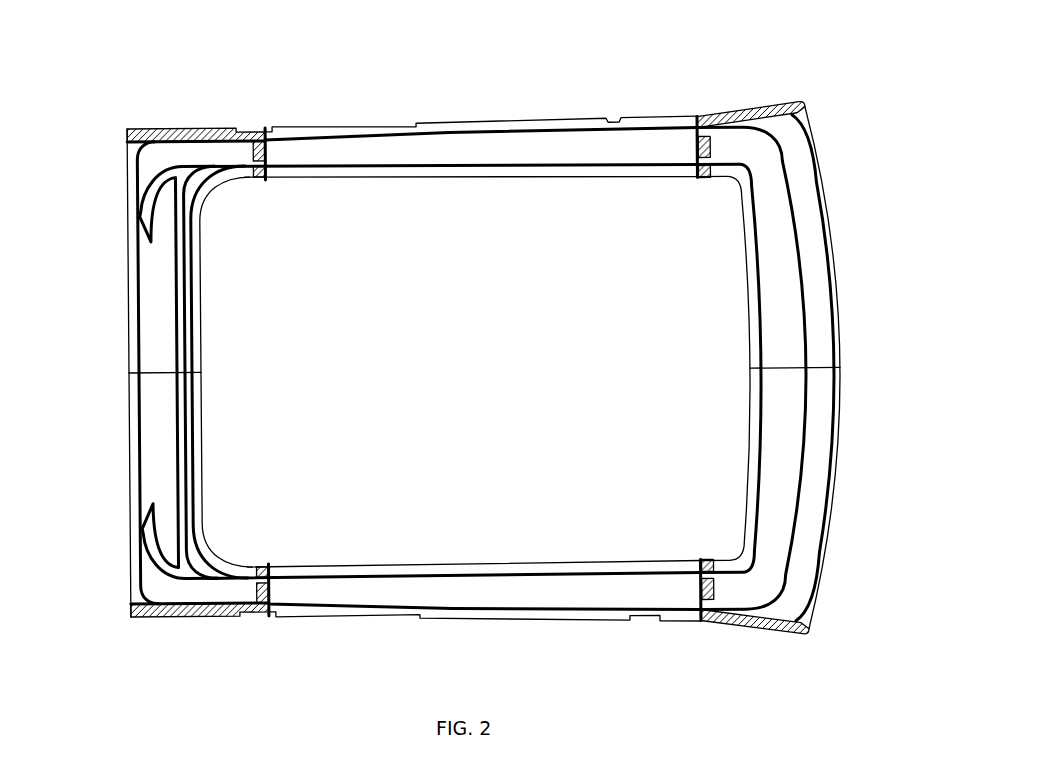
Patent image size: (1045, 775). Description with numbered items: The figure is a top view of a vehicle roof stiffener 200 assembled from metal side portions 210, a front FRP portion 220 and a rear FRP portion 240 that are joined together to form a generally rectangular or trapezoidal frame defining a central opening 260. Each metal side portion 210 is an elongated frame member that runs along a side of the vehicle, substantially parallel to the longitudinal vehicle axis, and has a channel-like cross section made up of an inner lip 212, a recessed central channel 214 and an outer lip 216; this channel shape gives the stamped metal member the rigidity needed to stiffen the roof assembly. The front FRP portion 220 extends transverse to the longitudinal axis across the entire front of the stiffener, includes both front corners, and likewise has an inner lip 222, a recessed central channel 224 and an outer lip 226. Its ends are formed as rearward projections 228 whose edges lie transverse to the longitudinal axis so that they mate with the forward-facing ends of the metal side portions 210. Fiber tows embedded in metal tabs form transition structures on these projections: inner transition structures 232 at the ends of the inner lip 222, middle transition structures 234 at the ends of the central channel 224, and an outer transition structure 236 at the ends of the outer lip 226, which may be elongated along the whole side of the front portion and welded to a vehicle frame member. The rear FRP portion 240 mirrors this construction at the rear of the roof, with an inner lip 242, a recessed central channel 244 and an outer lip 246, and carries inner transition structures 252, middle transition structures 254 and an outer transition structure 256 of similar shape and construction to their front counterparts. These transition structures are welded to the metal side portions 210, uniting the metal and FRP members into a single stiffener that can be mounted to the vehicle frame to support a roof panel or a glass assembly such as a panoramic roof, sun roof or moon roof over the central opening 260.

The vehicle roof stiffener 200 is at (116, 48).
The metal side portion 210 is at (483, 118).
The inner lip 212 is at (613, 177).
The recessed central channel 214 is at (418, 166).
The outer lip 216 is at (605, 124).
The front FRP portion 220 is at (840, 319).
The inner lip 222 is at (757, 362).
The recessed central channel 224 is at (772, 412).
The outer lip 226 is at (826, 244).
The rearward projection 228 is at (728, 150).
The inner transition structure 232 is at (703, 180).
The middle transition structure 234 is at (693, 161).
The outer transition structure 236 is at (715, 120).
The rear FRP portion 240 is at (127, 322).
The inner lip 242 is at (197, 312).
The recessed central channel 244 is at (167, 357).
The outer lip 246 is at (128, 425).
The inner transition structure 252 is at (256, 163).
The middle transition structure 254 is at (264, 161).
The outer transition structure 256 is at (146, 128).
The central opening 260 is at (486, 371).